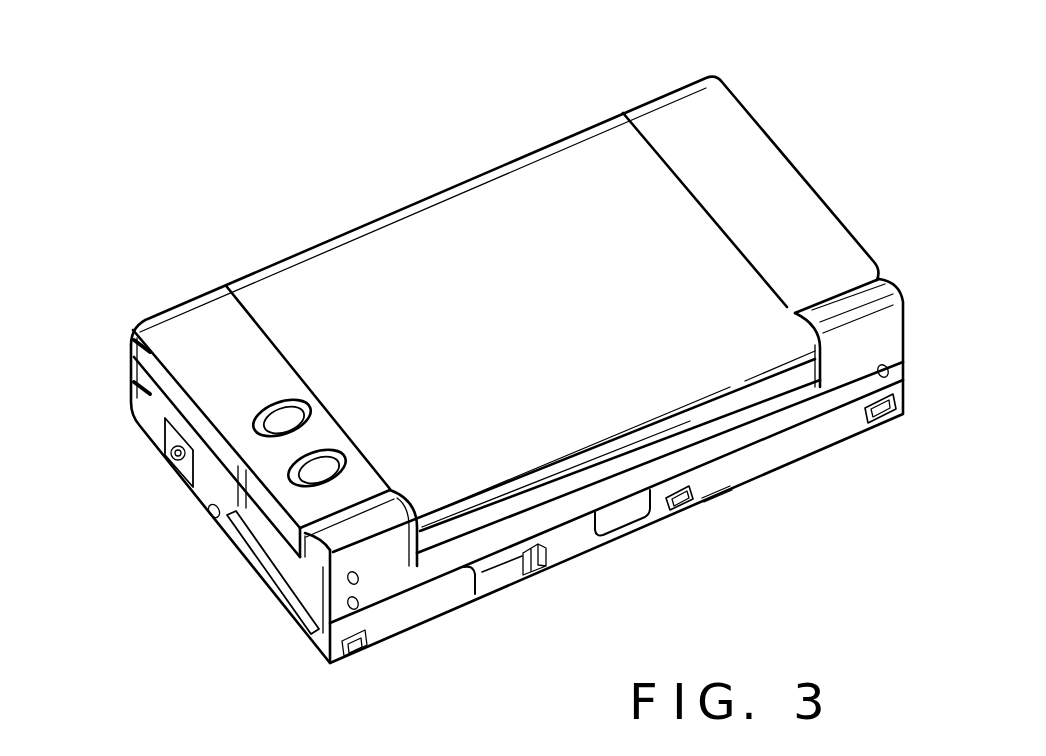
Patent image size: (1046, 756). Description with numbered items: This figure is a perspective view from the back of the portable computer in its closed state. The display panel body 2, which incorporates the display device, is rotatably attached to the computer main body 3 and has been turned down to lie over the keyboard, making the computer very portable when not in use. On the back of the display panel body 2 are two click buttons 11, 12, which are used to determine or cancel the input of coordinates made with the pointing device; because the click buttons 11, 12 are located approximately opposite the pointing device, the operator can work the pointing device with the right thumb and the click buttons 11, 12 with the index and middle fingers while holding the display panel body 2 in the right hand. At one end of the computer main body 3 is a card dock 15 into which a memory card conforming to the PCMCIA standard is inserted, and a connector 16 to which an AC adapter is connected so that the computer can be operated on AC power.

The display panel body 2 is at (130, 333).
The computer main body 3 is at (132, 378).
The click button 11 is at (304, 478).
The click button 12 is at (268, 402).
The card dock 15 is at (270, 576).
The connector 16 is at (178, 458).